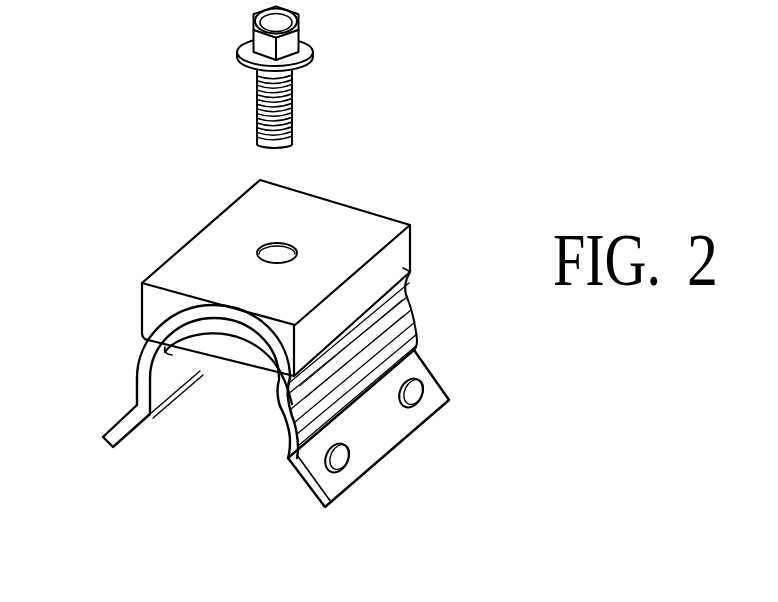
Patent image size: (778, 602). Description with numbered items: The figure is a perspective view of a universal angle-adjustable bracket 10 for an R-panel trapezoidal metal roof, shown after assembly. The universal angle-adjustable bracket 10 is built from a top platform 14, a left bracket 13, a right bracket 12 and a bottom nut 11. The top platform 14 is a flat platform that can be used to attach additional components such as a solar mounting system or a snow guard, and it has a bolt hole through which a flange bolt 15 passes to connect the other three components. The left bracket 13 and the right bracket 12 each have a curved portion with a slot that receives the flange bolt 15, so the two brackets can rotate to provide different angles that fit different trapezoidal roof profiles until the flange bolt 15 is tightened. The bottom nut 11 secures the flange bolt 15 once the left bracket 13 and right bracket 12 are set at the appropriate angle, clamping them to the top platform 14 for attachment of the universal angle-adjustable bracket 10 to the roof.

The universal angle-adjustable bracket 10 is at (114, 55).
The bottom nut 11 is at (232, 370).
The right bracket 12 is at (433, 372).
The left bracket 13 is at (128, 413).
The top platform 14 is at (358, 207).
The flange bolt 15 is at (295, 97).